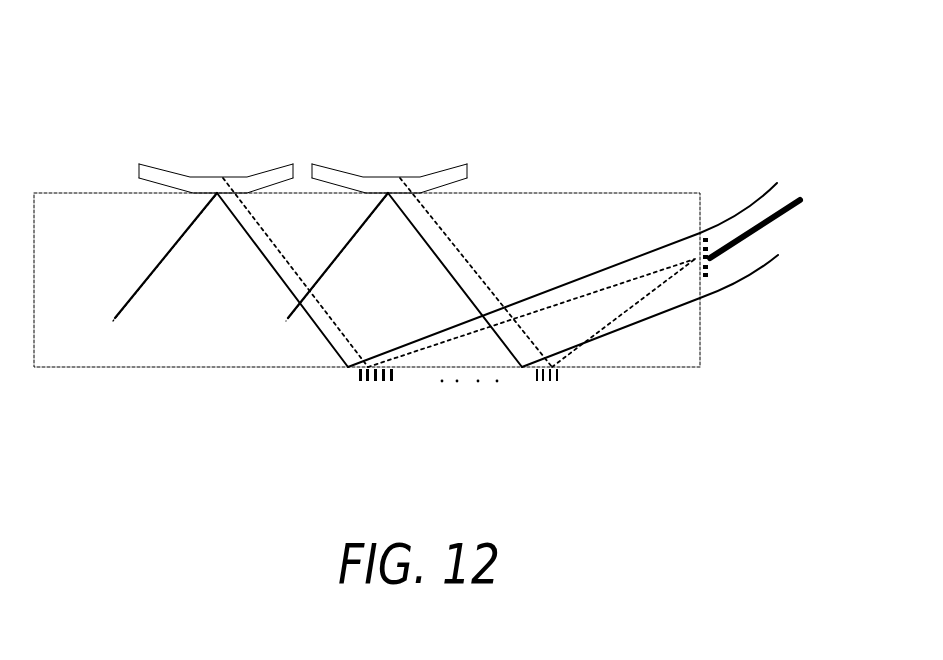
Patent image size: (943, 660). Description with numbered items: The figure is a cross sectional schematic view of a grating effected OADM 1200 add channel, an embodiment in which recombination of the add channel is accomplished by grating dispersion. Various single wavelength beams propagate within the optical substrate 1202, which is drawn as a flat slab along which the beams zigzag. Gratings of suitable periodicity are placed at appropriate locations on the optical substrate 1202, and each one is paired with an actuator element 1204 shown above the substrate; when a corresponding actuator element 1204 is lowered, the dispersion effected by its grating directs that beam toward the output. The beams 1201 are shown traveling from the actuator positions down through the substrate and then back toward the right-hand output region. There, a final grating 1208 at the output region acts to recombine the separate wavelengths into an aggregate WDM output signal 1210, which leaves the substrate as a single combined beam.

The grating effected OADM 1200 is at (530, 95).
The light beams 1201 is at (335, 258).
The optical substrate 1202 is at (693, 340).
The actuator element 1204 is at (375, 181).
The final grating 1208 is at (708, 268).
The aggregate WDM output signal 1210 is at (783, 217).